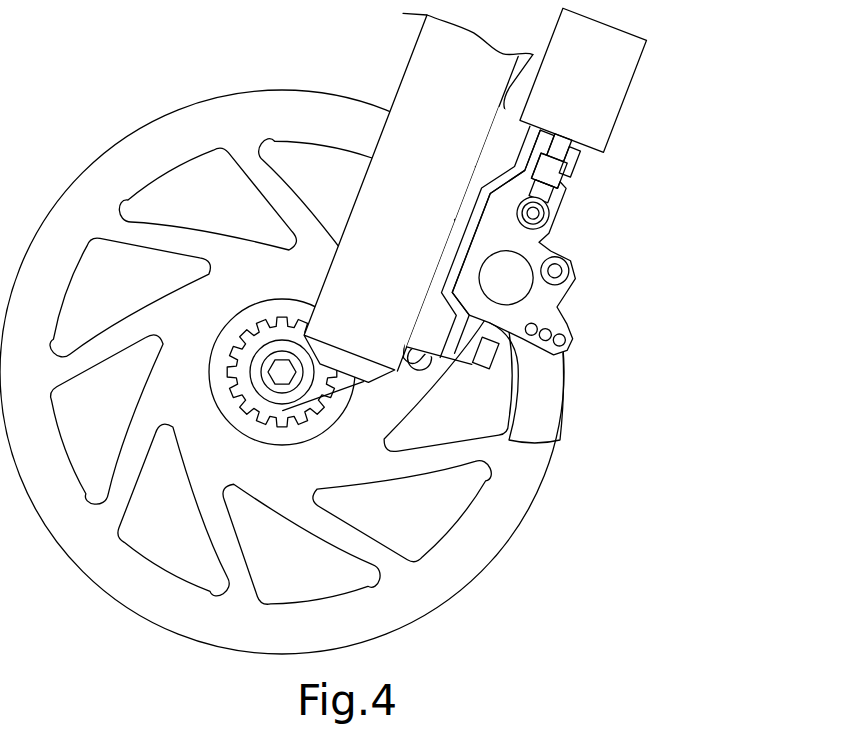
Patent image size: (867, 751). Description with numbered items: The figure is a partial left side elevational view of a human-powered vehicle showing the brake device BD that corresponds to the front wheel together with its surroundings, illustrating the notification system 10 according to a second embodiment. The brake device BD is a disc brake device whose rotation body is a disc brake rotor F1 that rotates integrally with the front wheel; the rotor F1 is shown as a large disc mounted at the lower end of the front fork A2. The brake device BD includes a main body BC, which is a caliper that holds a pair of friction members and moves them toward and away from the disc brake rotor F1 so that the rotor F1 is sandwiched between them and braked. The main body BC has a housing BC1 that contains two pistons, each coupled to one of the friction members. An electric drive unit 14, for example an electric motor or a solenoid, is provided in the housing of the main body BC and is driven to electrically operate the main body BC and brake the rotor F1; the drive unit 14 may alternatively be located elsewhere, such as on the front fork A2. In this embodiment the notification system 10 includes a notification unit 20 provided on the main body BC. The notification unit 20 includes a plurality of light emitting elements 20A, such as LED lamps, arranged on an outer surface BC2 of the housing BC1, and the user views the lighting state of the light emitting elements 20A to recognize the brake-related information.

The notification system 10 is at (699, 428).
The disc brake rotor F1 is at (128, 137).
The front fork A2 is at (410, 53).
The electric drive unit 14 is at (571, 111).
The brake device BD is at (720, 122).
The main body BC is at (544, 240).
The housing BC1 is at (532, 212).
The outer surface BC2 is at (555, 271).
The notification unit 20 is at (524, 254).
The light emitting element 20A is at (546, 335).